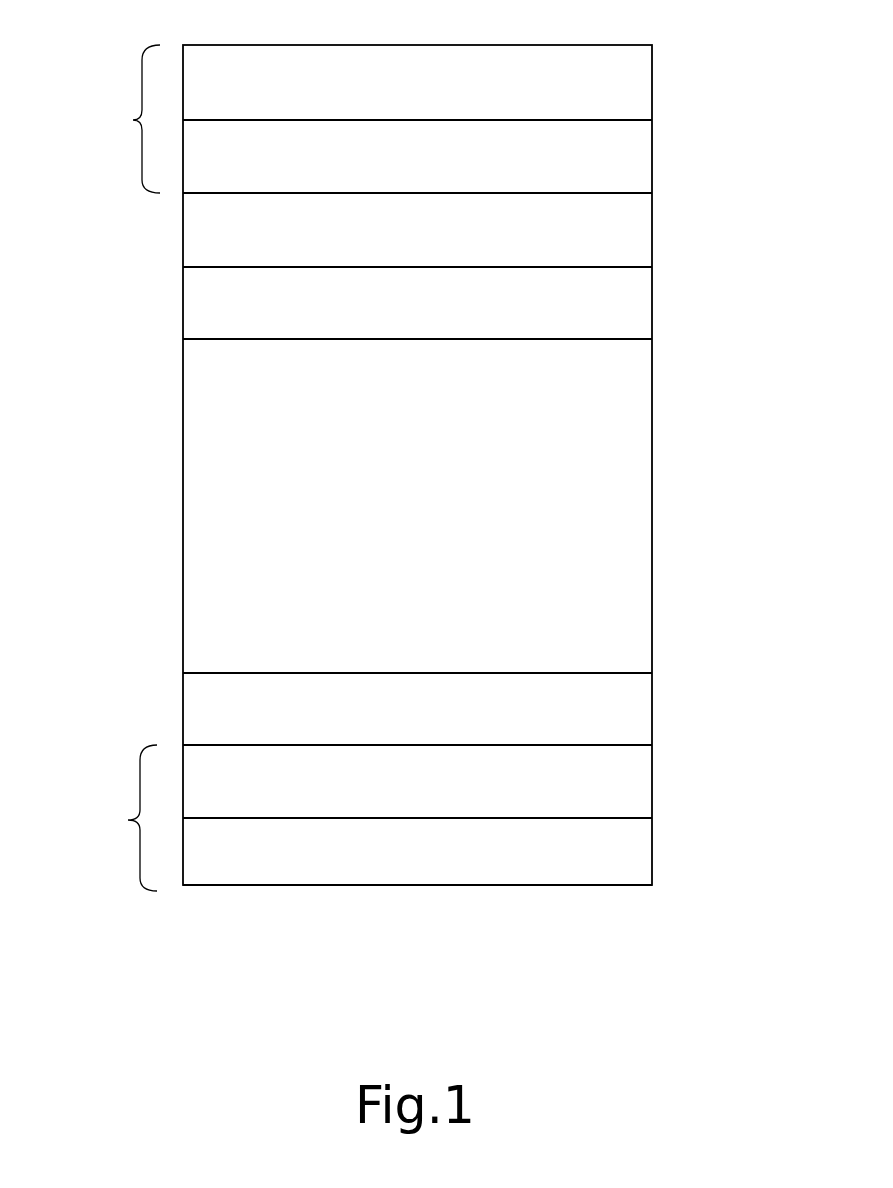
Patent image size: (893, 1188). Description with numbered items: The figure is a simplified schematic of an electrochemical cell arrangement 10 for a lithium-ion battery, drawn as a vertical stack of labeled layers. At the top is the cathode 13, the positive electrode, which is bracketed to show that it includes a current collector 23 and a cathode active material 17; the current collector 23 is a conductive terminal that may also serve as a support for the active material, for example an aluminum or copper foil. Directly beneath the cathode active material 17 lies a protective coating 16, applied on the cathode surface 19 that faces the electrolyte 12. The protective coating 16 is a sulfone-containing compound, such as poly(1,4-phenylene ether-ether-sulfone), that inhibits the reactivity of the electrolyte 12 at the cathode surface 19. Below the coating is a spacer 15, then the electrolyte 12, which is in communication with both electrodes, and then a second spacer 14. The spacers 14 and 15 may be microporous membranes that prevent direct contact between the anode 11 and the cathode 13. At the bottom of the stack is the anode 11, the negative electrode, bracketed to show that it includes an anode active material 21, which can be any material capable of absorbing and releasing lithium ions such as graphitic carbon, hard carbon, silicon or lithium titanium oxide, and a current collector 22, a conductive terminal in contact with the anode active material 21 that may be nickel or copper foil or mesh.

The electrochemical cell arrangement 10 is at (577, 934).
The anode 11 is at (128, 820).
The electrolyte 12 is at (654, 508).
The cathode 13 is at (133, 120).
The spacer 14 is at (654, 700).
The spacer 15 is at (654, 315).
The protective coating 16 is at (654, 240).
The cathode active material 17 is at (654, 162).
The cathode surface 19 is at (237, 195).
The anode active material 21 is at (654, 783).
The current collector 22 is at (654, 850).
The current collector 23 is at (654, 82).